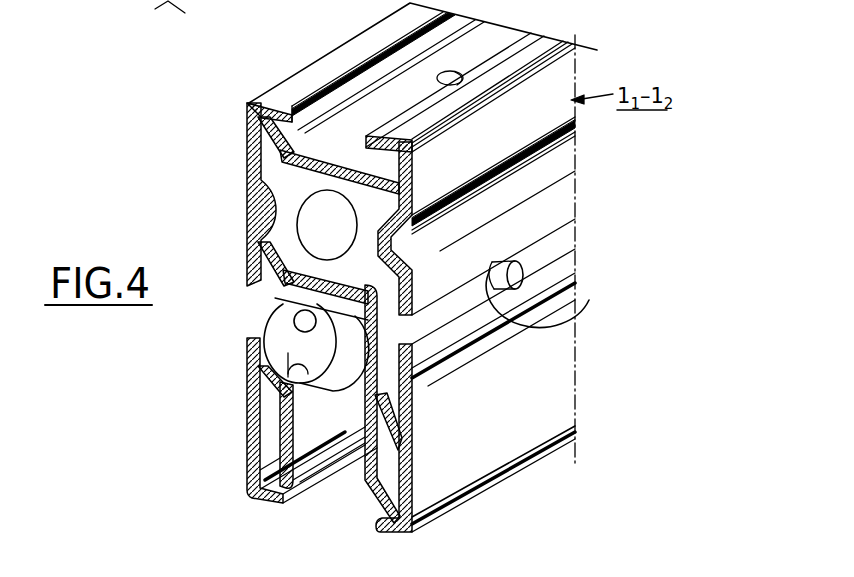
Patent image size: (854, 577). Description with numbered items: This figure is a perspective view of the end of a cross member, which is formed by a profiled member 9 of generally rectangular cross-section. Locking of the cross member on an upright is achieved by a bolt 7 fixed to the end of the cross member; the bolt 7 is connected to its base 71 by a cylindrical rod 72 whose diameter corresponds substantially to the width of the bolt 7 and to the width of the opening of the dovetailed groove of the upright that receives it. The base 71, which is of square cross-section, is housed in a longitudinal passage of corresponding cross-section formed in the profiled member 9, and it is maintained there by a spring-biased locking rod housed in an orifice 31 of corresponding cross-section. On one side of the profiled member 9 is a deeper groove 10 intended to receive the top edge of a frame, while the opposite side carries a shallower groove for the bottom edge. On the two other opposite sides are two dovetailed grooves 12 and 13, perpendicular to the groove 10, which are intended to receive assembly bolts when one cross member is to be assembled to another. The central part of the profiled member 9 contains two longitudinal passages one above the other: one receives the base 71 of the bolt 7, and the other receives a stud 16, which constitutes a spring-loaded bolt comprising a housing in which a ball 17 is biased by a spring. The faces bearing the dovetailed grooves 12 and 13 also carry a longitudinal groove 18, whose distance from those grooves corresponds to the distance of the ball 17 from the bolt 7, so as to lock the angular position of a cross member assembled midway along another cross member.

The bolt 7 is at (288, 388).
The base 71 is at (267, 332).
The cylindrical rod 72 is at (290, 293).
The profiled member 9 is at (560, 401).
The groove 10 is at (325, 488).
The dovetailed groove 12 is at (262, 335).
The dovetailed groove 13 is at (548, 262).
The stud 16 is at (270, 150).
The ball 17 is at (312, 212).
The longitudinal groove 18 is at (263, 213).
The orifice 31 is at (553, 352).